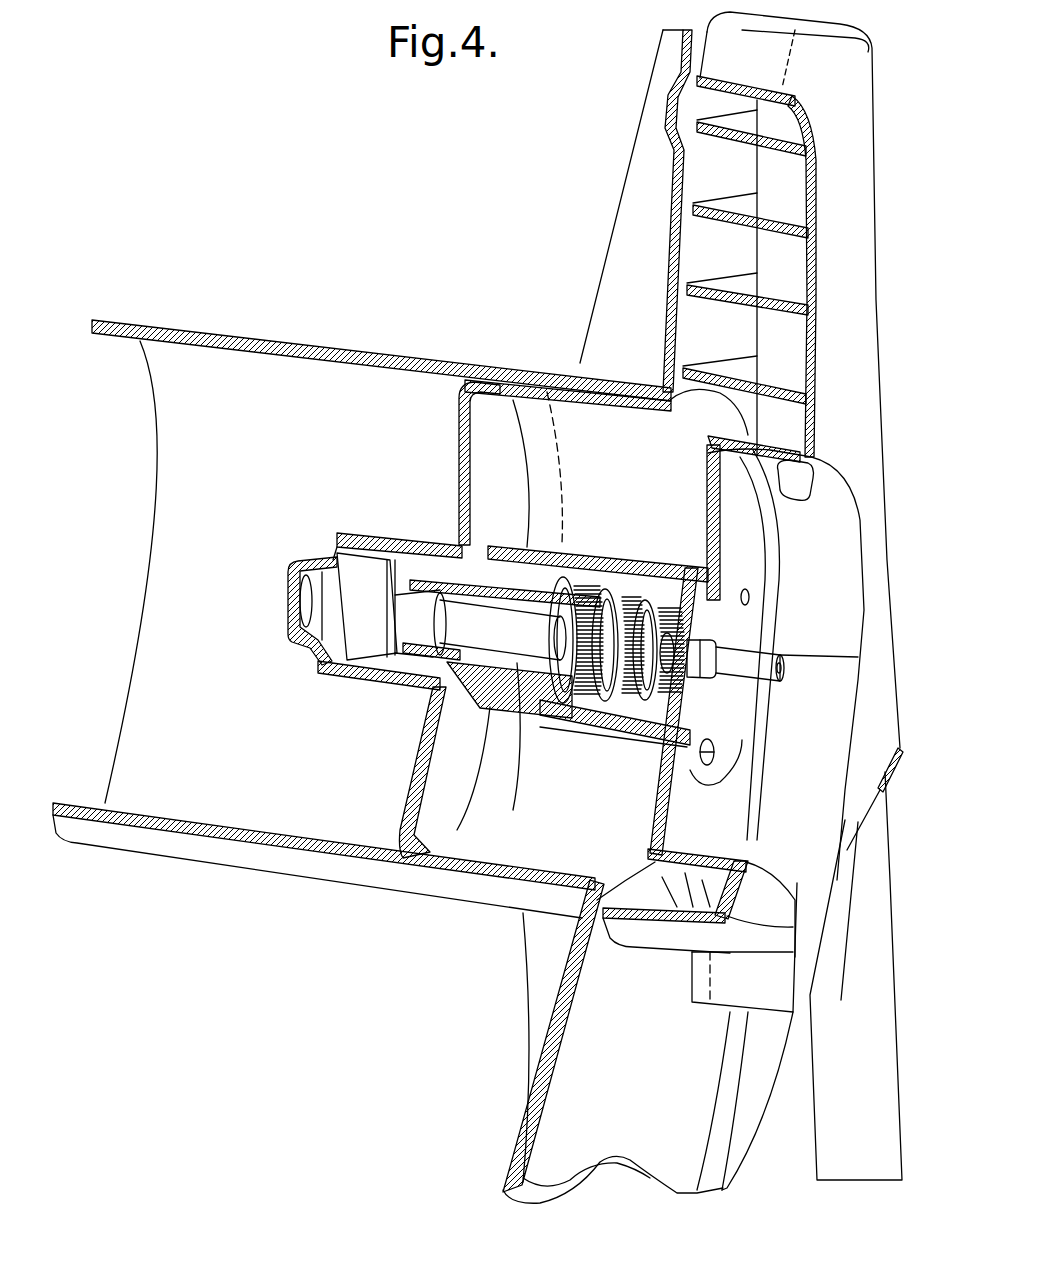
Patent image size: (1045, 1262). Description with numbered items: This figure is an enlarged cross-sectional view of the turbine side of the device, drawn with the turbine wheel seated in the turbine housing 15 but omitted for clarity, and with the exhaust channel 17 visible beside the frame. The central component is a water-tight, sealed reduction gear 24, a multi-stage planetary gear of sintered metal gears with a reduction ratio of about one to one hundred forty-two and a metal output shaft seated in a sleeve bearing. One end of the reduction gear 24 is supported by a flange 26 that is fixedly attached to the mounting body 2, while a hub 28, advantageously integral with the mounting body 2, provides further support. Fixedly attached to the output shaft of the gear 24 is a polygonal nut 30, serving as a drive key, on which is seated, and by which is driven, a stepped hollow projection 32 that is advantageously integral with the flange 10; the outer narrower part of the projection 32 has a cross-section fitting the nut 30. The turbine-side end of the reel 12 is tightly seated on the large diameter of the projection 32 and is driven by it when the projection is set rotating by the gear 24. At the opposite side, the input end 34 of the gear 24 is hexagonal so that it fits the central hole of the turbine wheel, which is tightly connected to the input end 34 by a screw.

The mounting body 2 is at (815, 263).
The flange 10 is at (668, 260).
The reel 12 is at (398, 345).
The turbine housing 15 is at (687, 845).
The exhaust channel 17 is at (813, 995).
The reduction gear 24 is at (617, 700).
The flange 26 is at (717, 747).
The hub 28 is at (507, 697).
The polygonal nut 30 is at (357, 633).
The stepped hollow projection 32 is at (460, 497).
The input end 34 is at (767, 673).